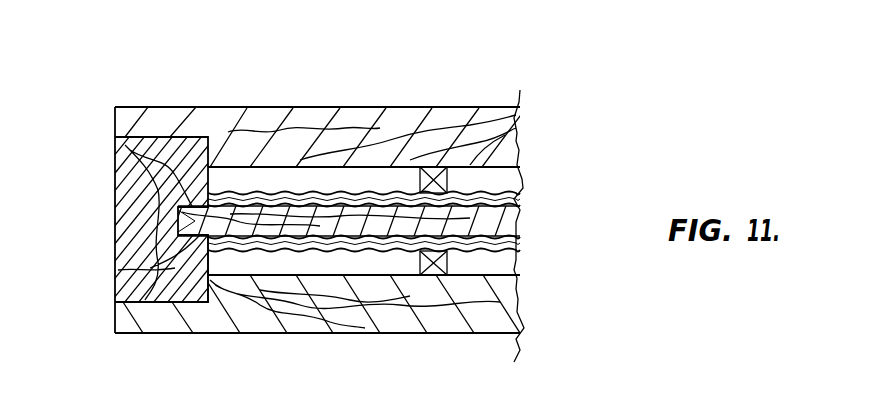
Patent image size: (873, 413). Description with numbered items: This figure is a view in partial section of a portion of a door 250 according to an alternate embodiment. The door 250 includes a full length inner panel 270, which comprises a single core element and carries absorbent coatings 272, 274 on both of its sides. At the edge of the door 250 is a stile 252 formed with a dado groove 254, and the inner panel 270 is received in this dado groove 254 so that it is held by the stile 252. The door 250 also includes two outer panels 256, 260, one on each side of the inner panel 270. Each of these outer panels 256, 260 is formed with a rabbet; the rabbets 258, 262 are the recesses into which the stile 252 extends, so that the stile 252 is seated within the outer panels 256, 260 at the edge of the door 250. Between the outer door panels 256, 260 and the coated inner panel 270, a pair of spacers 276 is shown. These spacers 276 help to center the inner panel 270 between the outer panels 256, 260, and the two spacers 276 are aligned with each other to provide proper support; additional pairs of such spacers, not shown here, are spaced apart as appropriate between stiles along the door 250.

The door 250 is at (447, 82).
The stile 252 is at (115, 222).
The dado groove 254 is at (165, 268).
The outer panel 256 is at (357, 120).
The rabbet 258 is at (208, 152).
The outer panel 260 is at (346, 320).
The rabbet 262 is at (173, 302).
The inner panel 270 is at (508, 223).
The absorbent coating 272 is at (500, 198).
The absorbent coating 274 is at (494, 252).
The spacers 276 is at (518, 131).